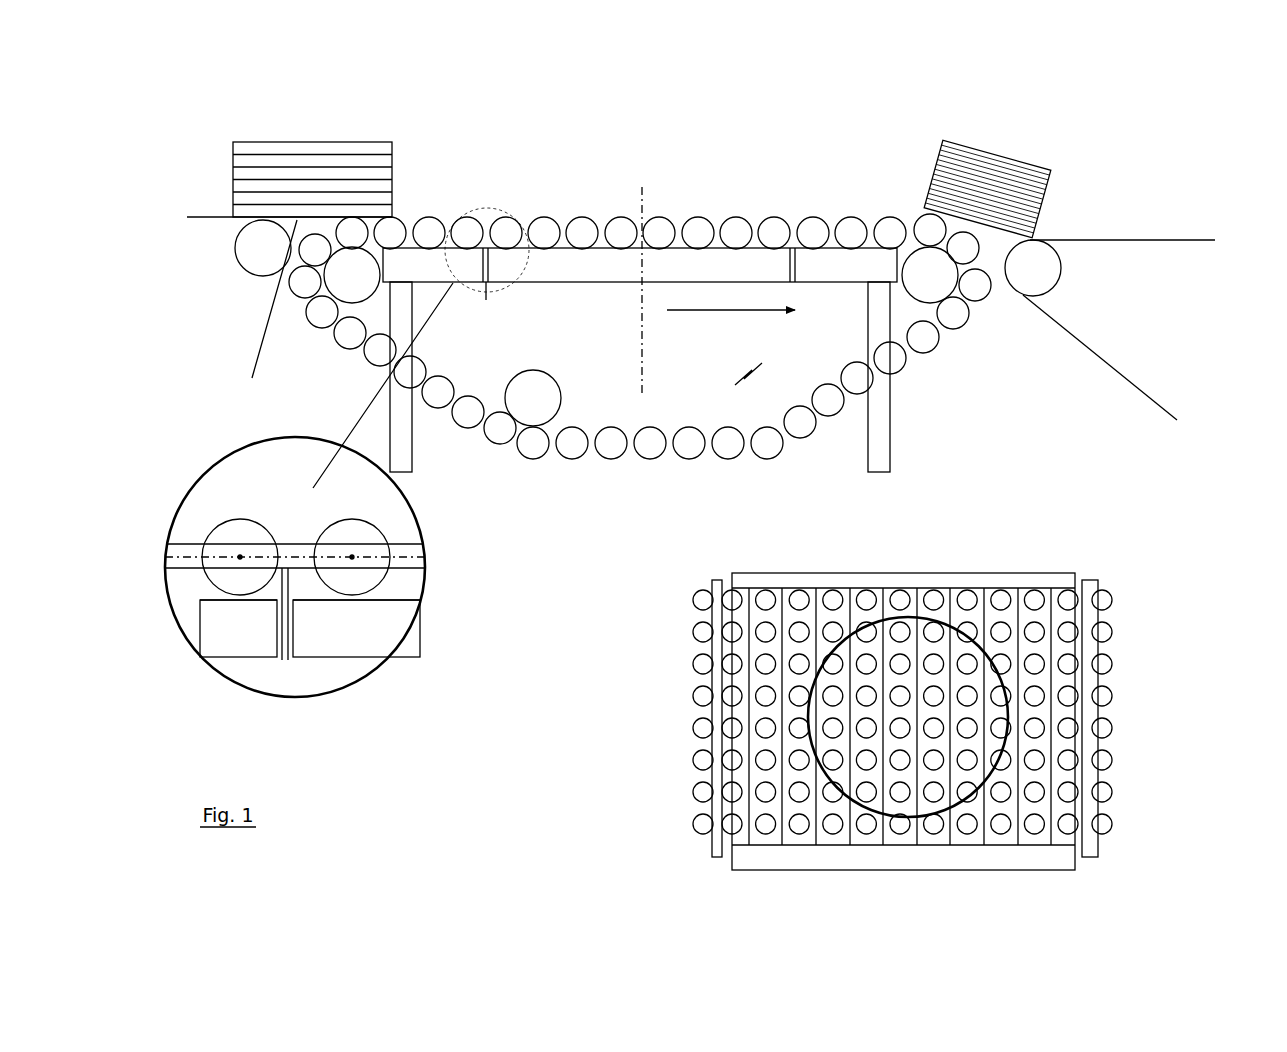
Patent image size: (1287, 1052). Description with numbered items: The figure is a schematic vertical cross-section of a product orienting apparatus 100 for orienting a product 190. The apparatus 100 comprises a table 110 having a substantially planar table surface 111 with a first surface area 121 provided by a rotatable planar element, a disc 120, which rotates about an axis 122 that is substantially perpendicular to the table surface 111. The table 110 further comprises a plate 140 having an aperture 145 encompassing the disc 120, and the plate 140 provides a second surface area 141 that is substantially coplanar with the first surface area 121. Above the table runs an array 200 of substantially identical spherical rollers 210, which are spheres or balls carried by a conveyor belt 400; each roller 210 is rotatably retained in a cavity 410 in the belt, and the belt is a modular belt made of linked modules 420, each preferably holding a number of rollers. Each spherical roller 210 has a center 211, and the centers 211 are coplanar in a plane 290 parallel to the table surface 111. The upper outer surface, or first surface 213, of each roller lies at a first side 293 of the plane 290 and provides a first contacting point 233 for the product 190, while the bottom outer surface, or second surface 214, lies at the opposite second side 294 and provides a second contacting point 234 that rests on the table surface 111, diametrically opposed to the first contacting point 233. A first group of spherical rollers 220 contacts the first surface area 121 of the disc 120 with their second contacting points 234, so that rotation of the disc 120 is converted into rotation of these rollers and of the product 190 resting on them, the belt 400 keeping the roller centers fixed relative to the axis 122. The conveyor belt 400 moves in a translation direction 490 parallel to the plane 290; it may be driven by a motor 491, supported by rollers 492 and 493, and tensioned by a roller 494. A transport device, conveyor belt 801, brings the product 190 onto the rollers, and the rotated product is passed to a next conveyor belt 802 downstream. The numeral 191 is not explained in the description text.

The product orienting apparatus 100 is at (898, 120).
The table 110 is at (868, 472).
The table surface 111 is at (792, 235).
The disc 120 is at (590, 267).
The first surface area 121 is at (405, 600).
The axis 122 is at (642, 187).
The plate 140 is at (820, 268).
The second surface area 141 is at (480, 247).
The aperture 145 is at (495, 306).
The product 190 is at (260, 142).
The media sheet 191 is at (297, 220).
The array of spherical rollers 200 is at (763, 138).
The spherical roller 210 is at (430, 218).
The center 211 is at (243, 560).
The first surface 213 is at (203, 537).
The second surface 214 is at (243, 600).
The first group of spherical rollers 220 is at (543, 217).
The first contacting point 233 is at (390, 217).
The second contacting point 234 is at (241, 560).
The plane 290 is at (180, 555).
The first side 293 is at (398, 555).
The second side 294 is at (417, 558).
The conveyor belt 400 is at (632, 447).
The cavity 410 is at (318, 570).
The module 420 is at (762, 596).
The direction 490 is at (731, 325).
The motor 491 is at (533, 398).
The roller 492 is at (263, 243).
The roller 493 is at (930, 280).
The roller 494 is at (765, 410).
The conveyor belt 801 is at (202, 215).
The next conveyor belt 802 is at (1092, 242).